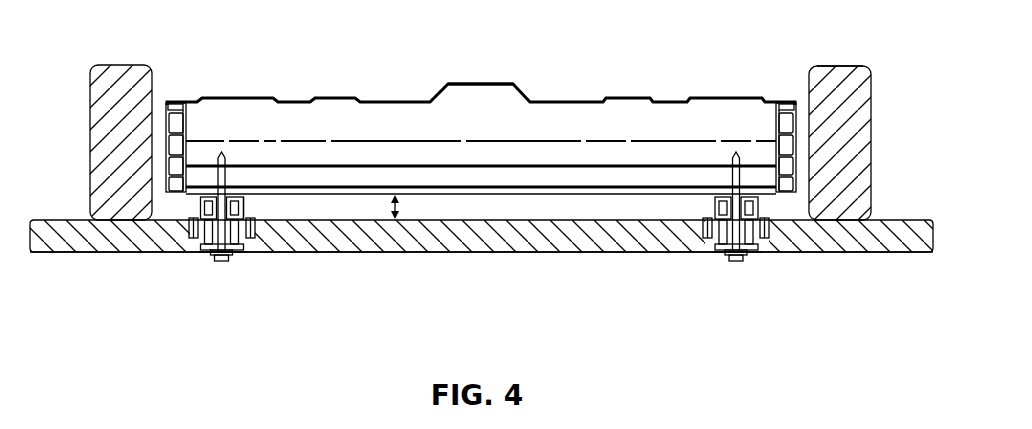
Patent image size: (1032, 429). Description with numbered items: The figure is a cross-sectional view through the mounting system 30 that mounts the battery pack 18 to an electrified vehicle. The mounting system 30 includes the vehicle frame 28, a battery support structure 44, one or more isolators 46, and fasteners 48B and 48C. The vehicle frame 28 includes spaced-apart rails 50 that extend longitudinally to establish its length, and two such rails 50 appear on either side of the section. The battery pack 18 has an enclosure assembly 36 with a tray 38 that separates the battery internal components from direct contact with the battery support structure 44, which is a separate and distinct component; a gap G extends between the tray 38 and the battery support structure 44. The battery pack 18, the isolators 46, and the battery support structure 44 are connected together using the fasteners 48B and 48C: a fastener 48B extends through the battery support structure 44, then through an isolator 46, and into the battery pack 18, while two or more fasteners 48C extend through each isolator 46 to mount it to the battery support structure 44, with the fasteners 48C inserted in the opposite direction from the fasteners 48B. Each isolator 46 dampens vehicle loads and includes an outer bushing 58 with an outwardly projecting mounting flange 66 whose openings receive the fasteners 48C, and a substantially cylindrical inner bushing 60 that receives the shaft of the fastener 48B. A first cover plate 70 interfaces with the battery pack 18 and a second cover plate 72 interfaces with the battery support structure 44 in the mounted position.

The battery pack 18 is at (594, 92).
The vehicle frame 28 is at (870, 66).
The mounting system 30 is at (120, 260).
The enclosure assembly 36 is at (712, 94).
The tray 38 is at (480, 196).
The battery support structure 44 is at (575, 238).
The isolator 46 is at (249, 206).
The fastener 48B is at (222, 261).
The fastener 48C is at (193, 232).
The rail 50 is at (102, 112).
The outer bushing 58 is at (245, 241).
The inner bushing 60 is at (207, 245).
The mounting flange 66 is at (257, 217).
The first cover plate 70 is at (218, 158).
The second cover plate 72 is at (208, 253).
The gap G is at (390, 214).